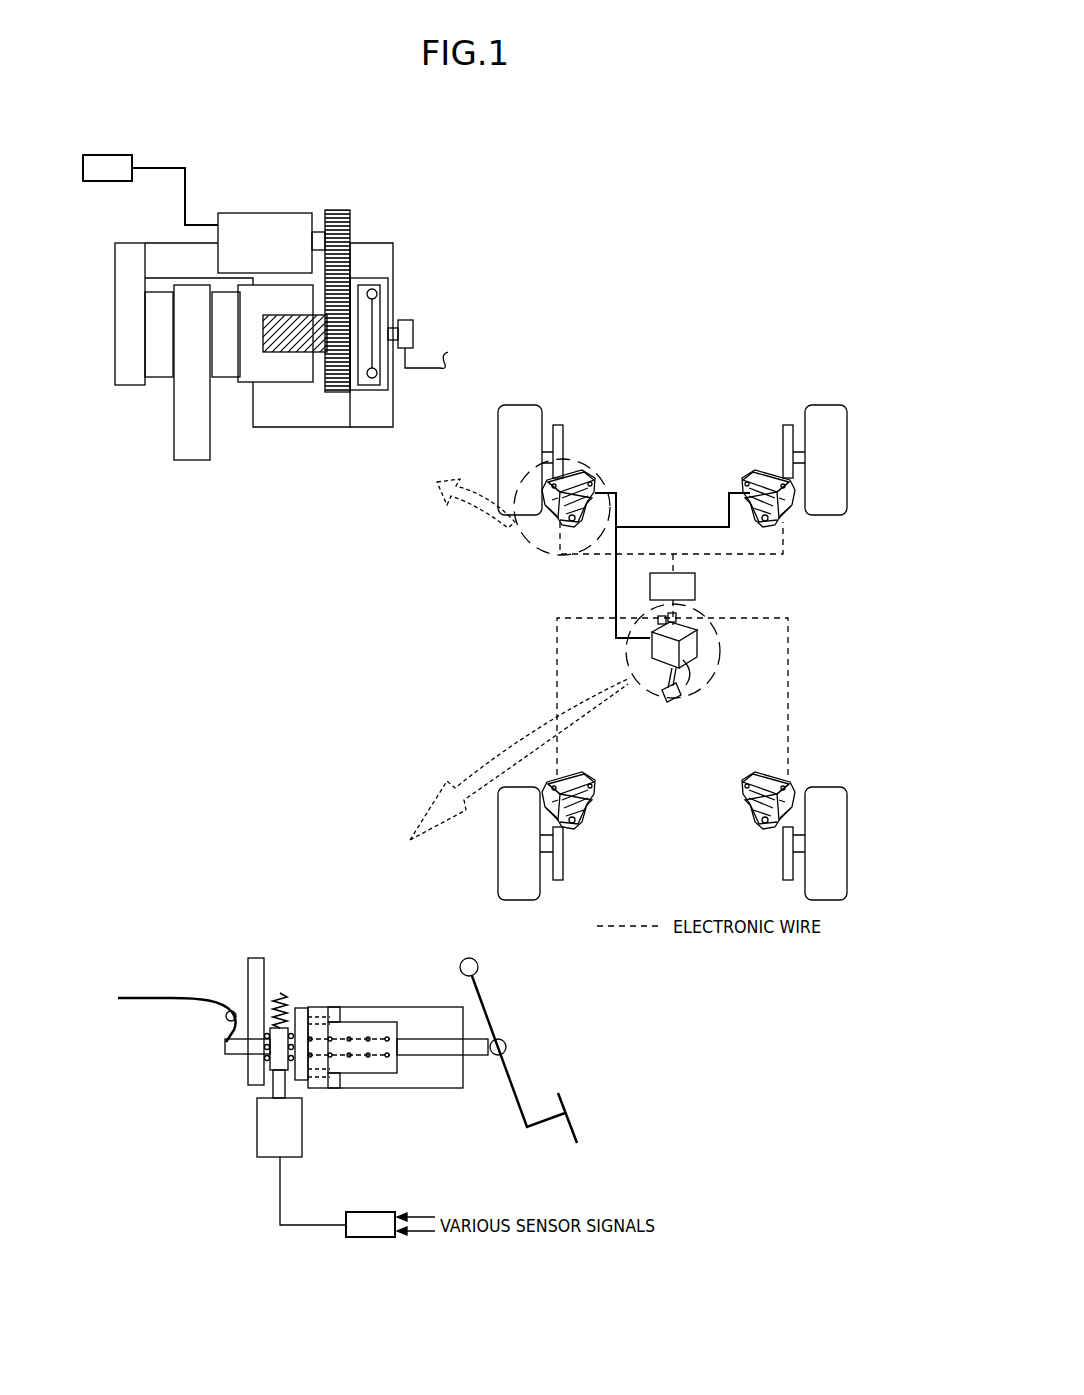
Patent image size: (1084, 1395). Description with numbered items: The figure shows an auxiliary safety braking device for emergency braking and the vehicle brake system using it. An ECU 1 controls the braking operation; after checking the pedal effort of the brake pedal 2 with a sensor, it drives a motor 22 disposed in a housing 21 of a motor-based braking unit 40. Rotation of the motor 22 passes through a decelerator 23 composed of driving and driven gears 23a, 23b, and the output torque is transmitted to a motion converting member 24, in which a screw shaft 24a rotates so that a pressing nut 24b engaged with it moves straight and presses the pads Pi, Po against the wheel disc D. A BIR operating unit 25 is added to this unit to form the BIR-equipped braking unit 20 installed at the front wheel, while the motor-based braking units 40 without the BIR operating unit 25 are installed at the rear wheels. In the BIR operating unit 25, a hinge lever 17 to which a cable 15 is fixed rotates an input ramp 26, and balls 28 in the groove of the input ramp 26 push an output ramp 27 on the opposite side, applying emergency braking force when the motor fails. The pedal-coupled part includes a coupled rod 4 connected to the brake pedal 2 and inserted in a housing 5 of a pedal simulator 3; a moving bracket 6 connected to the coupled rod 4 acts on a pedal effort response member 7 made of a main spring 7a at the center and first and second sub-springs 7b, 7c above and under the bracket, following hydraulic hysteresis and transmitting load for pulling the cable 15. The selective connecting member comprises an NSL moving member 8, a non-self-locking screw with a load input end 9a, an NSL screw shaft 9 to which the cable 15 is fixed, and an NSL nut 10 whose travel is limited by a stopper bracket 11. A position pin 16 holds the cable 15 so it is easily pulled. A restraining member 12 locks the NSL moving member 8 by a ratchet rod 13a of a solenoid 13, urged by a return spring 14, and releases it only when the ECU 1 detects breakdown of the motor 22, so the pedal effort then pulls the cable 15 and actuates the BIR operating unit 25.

The ECU 1 is at (104, 153).
The brake pedal 2 is at (490, 1004).
The pedal simulator 3 is at (703, 678).
The coupled rod 4 is at (476, 1057).
The housing 5 is at (425, 1090).
The moving bracket 6 is at (378, 1072).
The pedal effort response member 7 is at (379, 975).
The main spring 7a is at (350, 1040).
The first sub-spring 7b is at (333, 1017).
The second sub-spring 7c is at (316, 1037).
The NSL moving member 8 is at (273, 967).
The NSL screw shaft 9 is at (283, 1032).
The load input end 9a is at (303, 1035).
The NSL nut 10 is at (293, 975).
The stopper bracket 11 is at (255, 1040).
The restraining member 12 is at (215, 1124).
The solenoid 13 is at (265, 1130).
The ratchet rod 13a is at (278, 1086).
The return spring 14 is at (278, 1047).
The cable 15 is at (425, 375).
The position pin 16 is at (225, 1017).
The hinge lever 17 is at (415, 331).
The BIR-equipped braking unit 20 is at (240, 210).
The housing 21 is at (396, 418).
The motor 22 is at (276, 225).
The decelerator 23 is at (407, 165).
The driving gear 23a is at (350, 222).
The driven gear 23b is at (337, 300).
The motion converting member 24 is at (282, 402).
The screw shaft 24a is at (293, 352).
The pressing nut 24b is at (277, 375).
The BIR operating unit 25 is at (450, 303).
The input ramp 26 is at (378, 350).
The output ramp 27 is at (379, 292).
The balls 28 is at (376, 312).
The motor-based braking unit 40 is at (582, 832).
The pad Pi is at (225, 316).
The pad Po is at (155, 335).
The wheel disc D is at (190, 433).